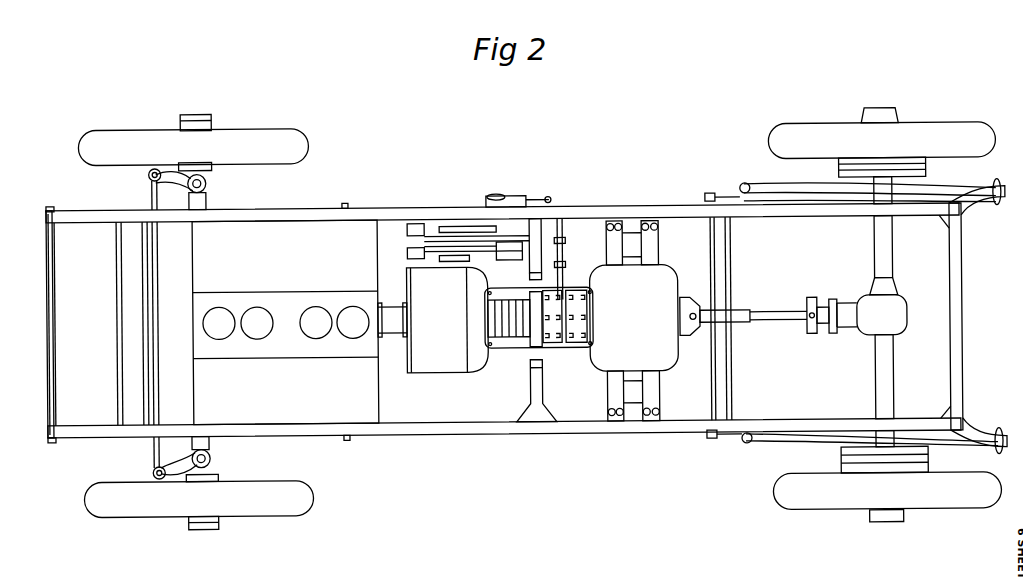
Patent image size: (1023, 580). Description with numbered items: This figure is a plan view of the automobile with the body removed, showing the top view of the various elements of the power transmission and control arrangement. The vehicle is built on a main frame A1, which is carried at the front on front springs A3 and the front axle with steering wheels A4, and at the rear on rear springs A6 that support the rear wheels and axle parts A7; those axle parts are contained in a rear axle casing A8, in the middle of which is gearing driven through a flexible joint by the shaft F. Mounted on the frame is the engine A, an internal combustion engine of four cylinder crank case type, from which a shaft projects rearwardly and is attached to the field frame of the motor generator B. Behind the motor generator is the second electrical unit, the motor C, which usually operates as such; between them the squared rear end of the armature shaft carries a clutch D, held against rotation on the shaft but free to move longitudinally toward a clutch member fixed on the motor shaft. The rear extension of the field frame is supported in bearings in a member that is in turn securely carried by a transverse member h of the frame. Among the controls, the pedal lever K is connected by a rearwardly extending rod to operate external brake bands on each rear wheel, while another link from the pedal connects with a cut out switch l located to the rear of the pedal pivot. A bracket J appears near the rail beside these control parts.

The engine A is at (280, 300).
The main frame A1 is at (380, 428).
The front springs A3 is at (60, 472).
The front axle with steering wheels A4 is at (150, 535).
The rear springs A6 is at (742, 492).
The rear wheels and axle parts A7 is at (866, 508).
The rear axle casing A8 is at (888, 266).
The motor generator B is at (445, 355).
The motor C is at (634, 350).
The clutch D is at (570, 348).
The shaft F is at (777, 315).
The transverse member h is at (534, 388).
The lever bracket J is at (505, 197).
The pedal lever K is at (406, 250).
The cut out switch l is at (483, 242).